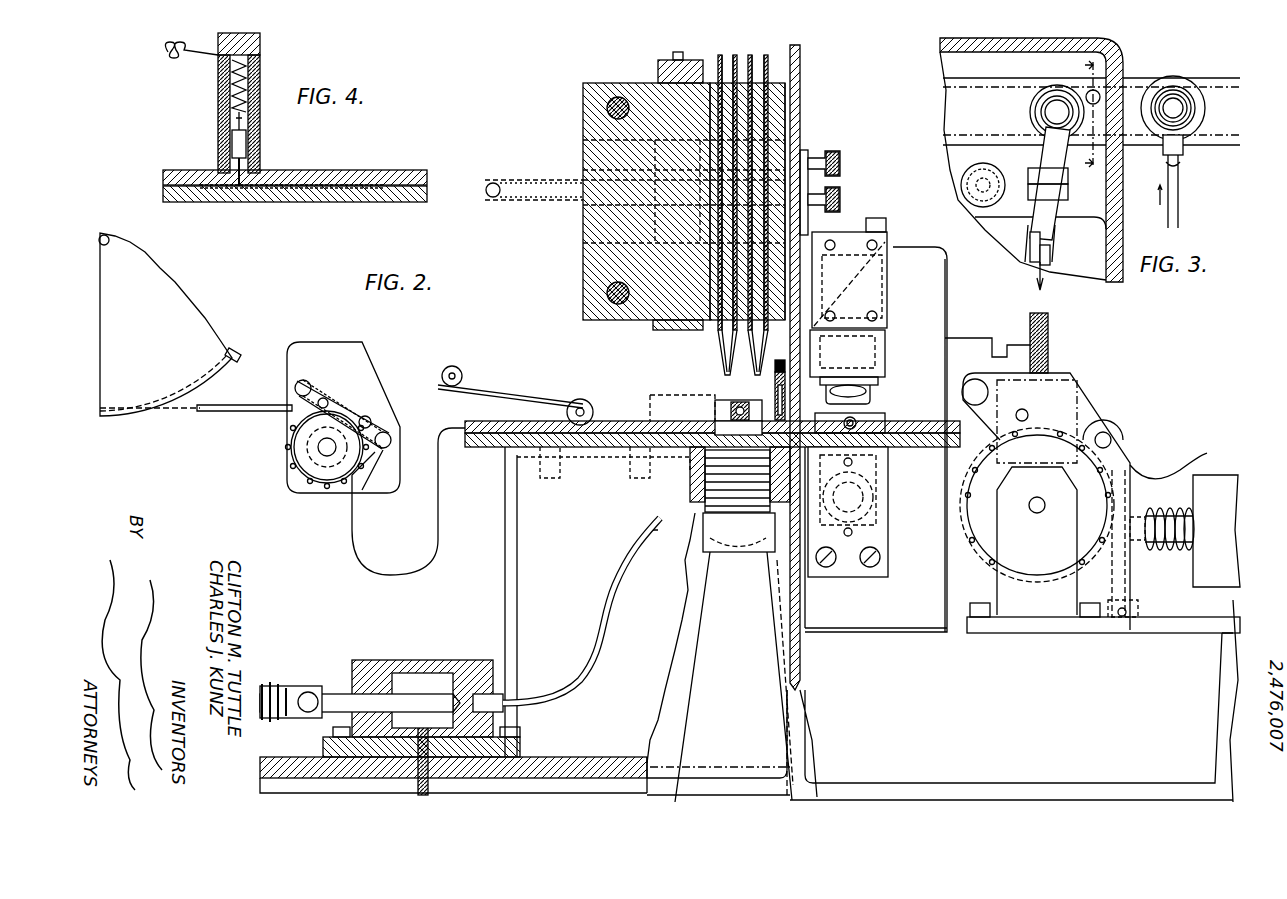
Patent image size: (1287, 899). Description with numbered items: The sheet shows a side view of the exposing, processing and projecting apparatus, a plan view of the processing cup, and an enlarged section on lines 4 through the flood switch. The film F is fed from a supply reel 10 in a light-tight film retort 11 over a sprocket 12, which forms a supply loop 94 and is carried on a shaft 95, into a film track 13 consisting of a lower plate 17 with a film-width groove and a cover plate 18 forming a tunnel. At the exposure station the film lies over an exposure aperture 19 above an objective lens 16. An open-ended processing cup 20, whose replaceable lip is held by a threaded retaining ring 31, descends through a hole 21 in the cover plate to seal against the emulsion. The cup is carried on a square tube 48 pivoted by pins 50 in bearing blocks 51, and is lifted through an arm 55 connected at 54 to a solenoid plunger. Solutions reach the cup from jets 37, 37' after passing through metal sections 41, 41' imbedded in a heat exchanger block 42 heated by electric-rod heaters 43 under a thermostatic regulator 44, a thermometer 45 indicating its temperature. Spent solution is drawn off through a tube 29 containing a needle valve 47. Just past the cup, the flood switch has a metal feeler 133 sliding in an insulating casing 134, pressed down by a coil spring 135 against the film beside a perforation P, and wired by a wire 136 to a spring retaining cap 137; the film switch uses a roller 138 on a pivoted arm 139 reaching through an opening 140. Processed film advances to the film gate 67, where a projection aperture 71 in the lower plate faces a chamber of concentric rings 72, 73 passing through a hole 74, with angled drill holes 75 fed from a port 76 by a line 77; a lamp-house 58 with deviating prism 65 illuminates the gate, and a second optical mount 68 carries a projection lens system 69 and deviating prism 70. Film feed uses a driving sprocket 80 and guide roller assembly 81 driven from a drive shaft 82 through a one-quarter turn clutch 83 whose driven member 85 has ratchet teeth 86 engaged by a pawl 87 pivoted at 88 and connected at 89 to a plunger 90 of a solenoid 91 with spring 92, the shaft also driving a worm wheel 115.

In FIG. 3, the section line 4— 4 is at (1081, 112).
In FIG. 2, the supply reel 10 is at (240, 362).
In FIG. 2, the film retort 11 is at (165, 324).
In FIG. 2, the sprocket 12 is at (315, 480).
In FIG. 4, the film track 13 is at (170, 188).
In FIG. 3, the film track 13 is at (1180, 85).
In FIG. 2, the film track 13 is at (620, 421).
In FIG. 2, the objective lens 16 is at (739, 532).
In FIG. 4, the lower plate 17 is at (400, 200).
In FIG. 3, the lower plate 17 is at (960, 100).
In FIG. 2, the lower plate 17 is at (930, 445).
In FIG. 4, the cover plate 18 is at (400, 178).
In FIG. 2, the cover plate 18 is at (930, 410).
In FIG. 2, the exposure aperture 19 is at (740, 479).
In FIG. 3, the processing cup 20 is at (1052, 86).
In FIG. 2, the processing cup 20 is at (731, 406).
In FIG. 3, the hole 21 is at (1033, 105).
In FIG. 2, the hole 21 is at (772, 392).
In FIG. 3, the tube 29 is at (1030, 268).
In FIG. 2, the tube 29 is at (590, 615).
In FIG. 2, the threaded retaining ring 31 is at (725, 421).
In FIG. 2, the jet 37 is at (704, 355).
In FIG. 2, the jet 37' is at (780, 348).
In FIG. 2, the metal section 41 is at (721, 202).
In FIG. 2, the metal section 41' is at (763, 202).
In FIG. 2, the heat exchanger block 42 is at (620, 82).
In FIG. 2, the electric-rod heaters 43 is at (605, 126).
In FIG. 2, the thermostatic regulator 44 is at (660, 60).
In FIG. 2, the thermometer 45 is at (548, 205).
In FIG. 2, the needle valve 47 is at (470, 672).
In FIG. 3, the square tube 48 is at (1046, 158).
In FIG. 2, the square tube 48 is at (730, 395).
In FIG. 3, the pins 50 is at (1068, 176).
In FIG. 3, the bearing blocks 51 is at (1068, 196).
In FIG. 3, the pivotal connection 54 is at (1052, 255).
In FIG. 3, the arm 55 is at (1054, 240).
In FIG. 2, the lamp-house 58 is at (872, 273).
In FIG. 2, the deviating prism 65 is at (878, 497).
In FIG. 2, the film gate 67 is at (880, 414).
In FIG. 2, the second optical mount 68 is at (870, 395).
In FIG. 2, the projection lens system 69 is at (885, 372).
In FIG. 2, the deviating prism 70 is at (887, 296).
In FIG. 2, the projection aperture 71 is at (895, 455).
In FIG. 3, the outer ring 72 is at (1160, 82).
In FIG. 3, the inner ring 73 is at (1195, 85).
In FIG. 3, the hole 74 is at (1182, 128).
In FIG. 2, the hole 74 is at (800, 415).
In FIG. 3, the drill holes 75 is at (1190, 110).
In FIG. 3, the port 76 is at (1165, 140).
In FIG. 3, the line 77 is at (1178, 196).
In FIG. 2, the line 77 is at (843, 423).
In FIG. 2, the driving sprocket 80 is at (985, 566).
In FIG. 2, the guide roller assembly 81 is at (1095, 405).
In FIG. 2, the drive shaft 82 is at (1033, 513).
In FIG. 2, the one-quarter turn clutch 83 is at (982, 555).
In FIG. 2, the driven member 85 is at (995, 578).
In FIG. 2, the ratchet teeth 86 is at (968, 492).
In FIG. 2, the pawl 87 is at (1128, 572).
In FIG. 2, the pivot 88 is at (1126, 612).
In FIG. 2, the pivot 89 is at (1140, 527).
In FIG. 2, the plunger 90 is at (1180, 548).
In FIG. 2, the solenoid 91 is at (1216, 531).
In FIG. 2, the spring 92 is at (1182, 508).
In FIG. 2, the supply loop 94 is at (380, 575).
In FIG. 2, the shaft 95 is at (322, 452).
In FIG. 2, the worm wheel 115 is at (1048, 323).
In FIG. 4, the metal feeler 133 is at (239, 186).
In FIG. 4, the casing 134 is at (232, 130).
In FIG. 2, the casing 134 is at (786, 380).
In FIG. 4, the coil spring 135 is at (232, 94).
In FIG. 4, the wire 136 is at (165, 58).
In FIG. 4, the spring retaining cap 137 is at (258, 42).
In FIG. 3, the spring retaining cap 137 is at (1100, 95).
In FIG. 2, the spring retaining cap 137 is at (786, 370).
In FIG. 2, the roller 138 is at (598, 388).
In FIG. 2, the pivoted arm 139 is at (520, 387).
In FIG. 2, the opening 140 is at (567, 412).
In FIG. 4, the film F is at (308, 188).
In FIG. 2, the film F is at (438, 520).
In FIG. 4, the perforation P is at (220, 188).